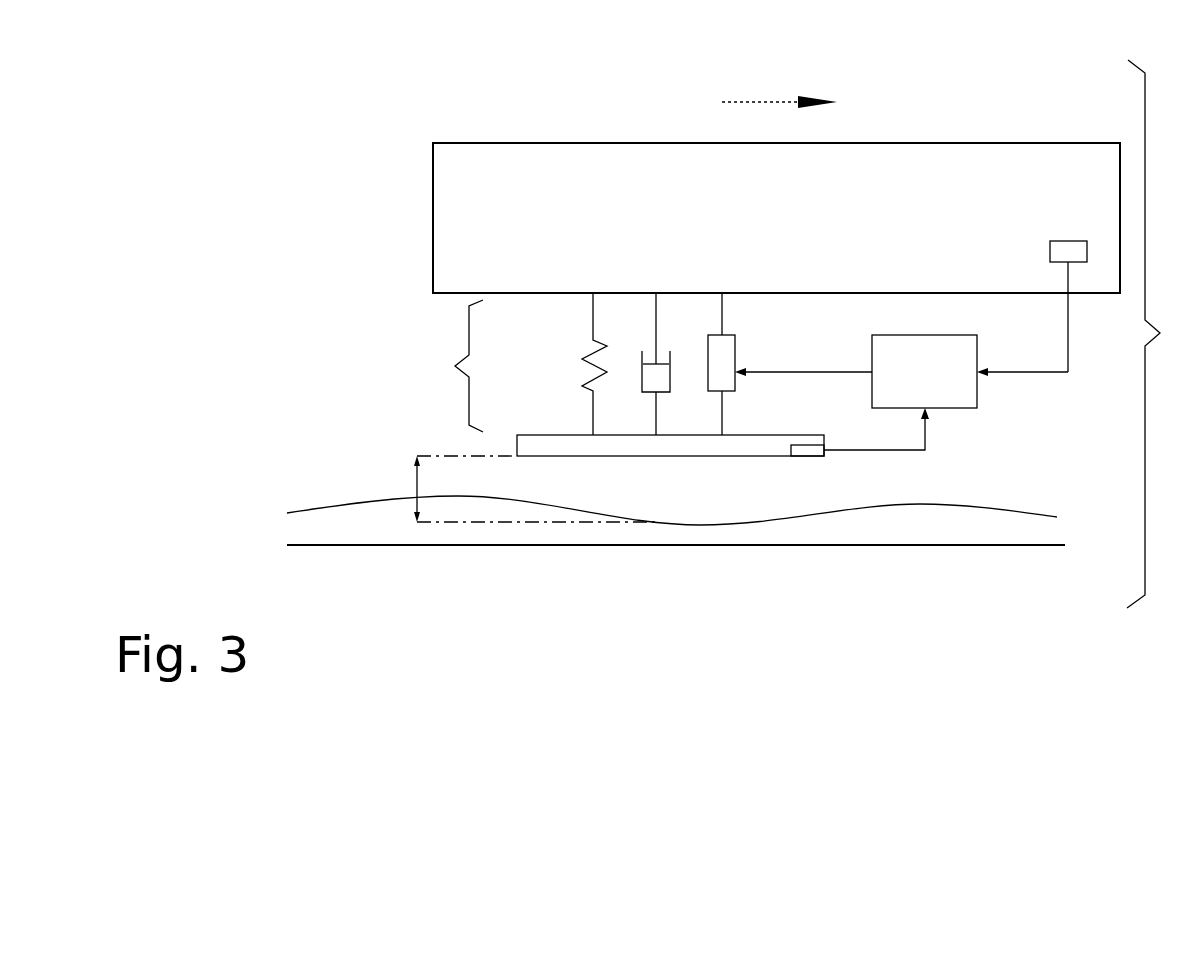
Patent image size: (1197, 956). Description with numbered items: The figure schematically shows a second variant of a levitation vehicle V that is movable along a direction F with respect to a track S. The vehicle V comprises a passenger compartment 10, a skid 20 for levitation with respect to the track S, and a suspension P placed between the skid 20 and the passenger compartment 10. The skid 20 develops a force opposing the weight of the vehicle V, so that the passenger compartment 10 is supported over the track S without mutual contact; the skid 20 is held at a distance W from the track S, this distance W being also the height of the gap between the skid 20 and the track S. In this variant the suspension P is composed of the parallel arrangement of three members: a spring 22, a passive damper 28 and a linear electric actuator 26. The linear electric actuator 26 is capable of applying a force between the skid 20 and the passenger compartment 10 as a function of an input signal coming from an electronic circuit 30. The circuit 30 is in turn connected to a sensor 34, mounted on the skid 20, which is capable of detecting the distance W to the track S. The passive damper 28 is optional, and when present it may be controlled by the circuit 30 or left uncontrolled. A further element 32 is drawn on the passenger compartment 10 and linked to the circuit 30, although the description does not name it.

The passenger compartment 10 is at (992, 143).
The skid 20 is at (537, 435).
The spring 22 is at (590, 355).
The linear electric actuator 26 is at (735, 345).
The passive damper 28 is at (662, 387).
The electronic circuit 30 is at (901, 371).
The body sensor 32 is at (1062, 241).
The sensor 34 is at (806, 457).
The direction F is at (779, 118).
The suspension P is at (453, 366).
The vehicle V is at (1158, 334).
The distance W is at (515, 489).
The track S is at (1015, 510).